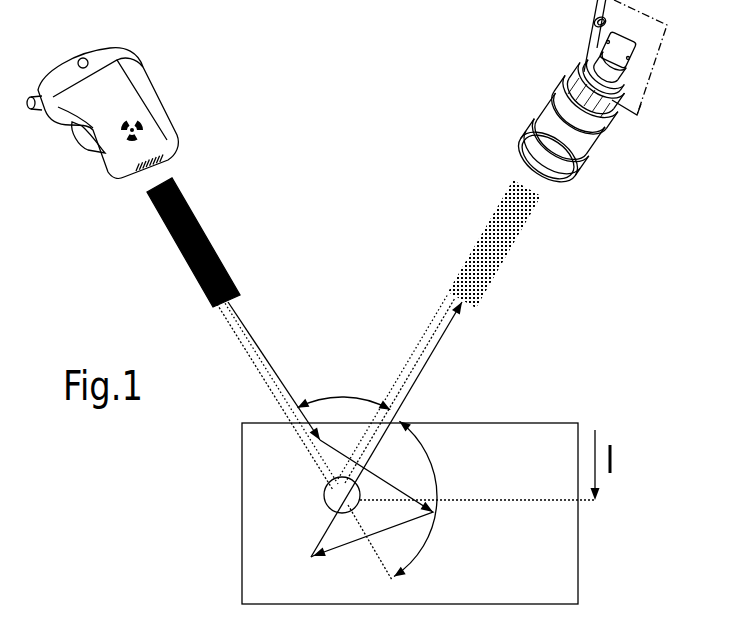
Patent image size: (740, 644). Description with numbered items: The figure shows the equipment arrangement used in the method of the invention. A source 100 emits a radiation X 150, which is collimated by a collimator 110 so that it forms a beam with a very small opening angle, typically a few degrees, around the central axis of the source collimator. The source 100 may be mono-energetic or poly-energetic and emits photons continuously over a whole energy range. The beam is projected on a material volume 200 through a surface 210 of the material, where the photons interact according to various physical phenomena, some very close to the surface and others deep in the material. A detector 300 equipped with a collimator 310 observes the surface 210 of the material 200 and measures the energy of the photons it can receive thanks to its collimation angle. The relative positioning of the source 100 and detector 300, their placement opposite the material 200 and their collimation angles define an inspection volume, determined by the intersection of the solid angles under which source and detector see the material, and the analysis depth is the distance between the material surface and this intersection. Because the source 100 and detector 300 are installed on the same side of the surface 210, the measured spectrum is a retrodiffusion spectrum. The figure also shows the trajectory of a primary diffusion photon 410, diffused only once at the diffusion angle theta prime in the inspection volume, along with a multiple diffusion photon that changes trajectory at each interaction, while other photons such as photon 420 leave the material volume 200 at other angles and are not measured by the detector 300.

The source 100 is at (137, 97).
The collimator 110 is at (182, 253).
The radiation X 150 is at (255, 313).
The material volume 200 is at (242, 503).
The surface 210 is at (315, 373).
The detector 300 is at (540, 100).
The collimator 310 is at (507, 252).
The primary diffusion photon 410 is at (396, 392).
The photon 420 is at (402, 418).